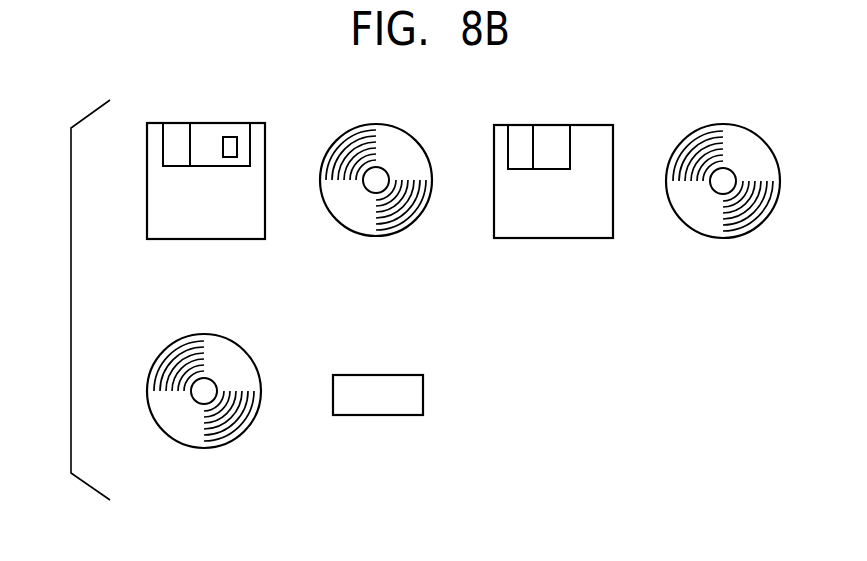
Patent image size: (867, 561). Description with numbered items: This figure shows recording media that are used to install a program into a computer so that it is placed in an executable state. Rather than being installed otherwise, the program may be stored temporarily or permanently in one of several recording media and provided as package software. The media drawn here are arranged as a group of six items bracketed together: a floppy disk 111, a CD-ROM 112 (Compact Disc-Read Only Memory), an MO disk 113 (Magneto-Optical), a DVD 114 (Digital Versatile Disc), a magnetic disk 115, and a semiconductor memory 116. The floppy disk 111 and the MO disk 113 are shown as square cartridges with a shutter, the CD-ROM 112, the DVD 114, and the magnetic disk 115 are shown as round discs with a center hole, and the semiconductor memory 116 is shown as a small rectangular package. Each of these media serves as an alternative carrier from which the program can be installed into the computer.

The floppy disk 111 is at (208, 240).
The CD-ROM 112 is at (377, 237).
The MO disk 113 is at (551, 239).
The DVD 114 is at (724, 239).
The magnetic disk 115 is at (205, 449).
The semiconductor memory 116 is at (386, 416).